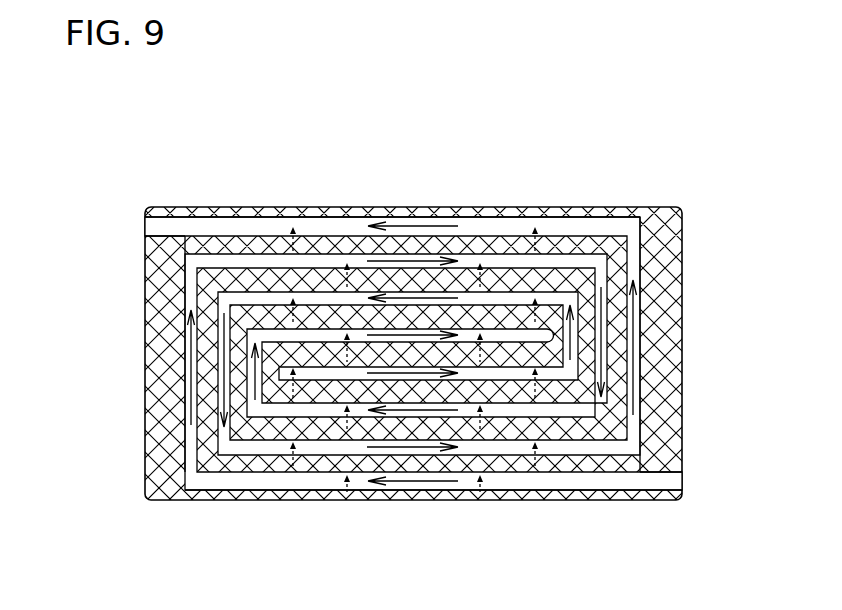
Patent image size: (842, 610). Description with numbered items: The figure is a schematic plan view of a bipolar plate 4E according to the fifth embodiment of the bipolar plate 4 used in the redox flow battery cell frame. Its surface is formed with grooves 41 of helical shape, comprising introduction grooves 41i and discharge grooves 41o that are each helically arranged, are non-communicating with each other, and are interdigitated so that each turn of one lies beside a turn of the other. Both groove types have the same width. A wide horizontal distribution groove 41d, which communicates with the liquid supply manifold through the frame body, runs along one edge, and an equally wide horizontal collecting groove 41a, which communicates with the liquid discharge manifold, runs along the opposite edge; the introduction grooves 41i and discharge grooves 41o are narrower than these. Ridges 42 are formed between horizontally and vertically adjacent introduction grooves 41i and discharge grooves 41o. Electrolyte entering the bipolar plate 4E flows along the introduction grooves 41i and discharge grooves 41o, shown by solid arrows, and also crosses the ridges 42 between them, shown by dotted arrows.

The bipolar plate 4 is at (421, 345).
The bipolar plate according to the fifth embodiment 4E is at (405, 209).
The grooves 41 is at (413, 358).
The collecting groove 41a is at (318, 227).
The distribution groove 41d is at (613, 482).
The discharge grooves 41o is at (465, 340).
The introduction grooves 41i is at (515, 337).
The ridges 42 is at (183, 290).